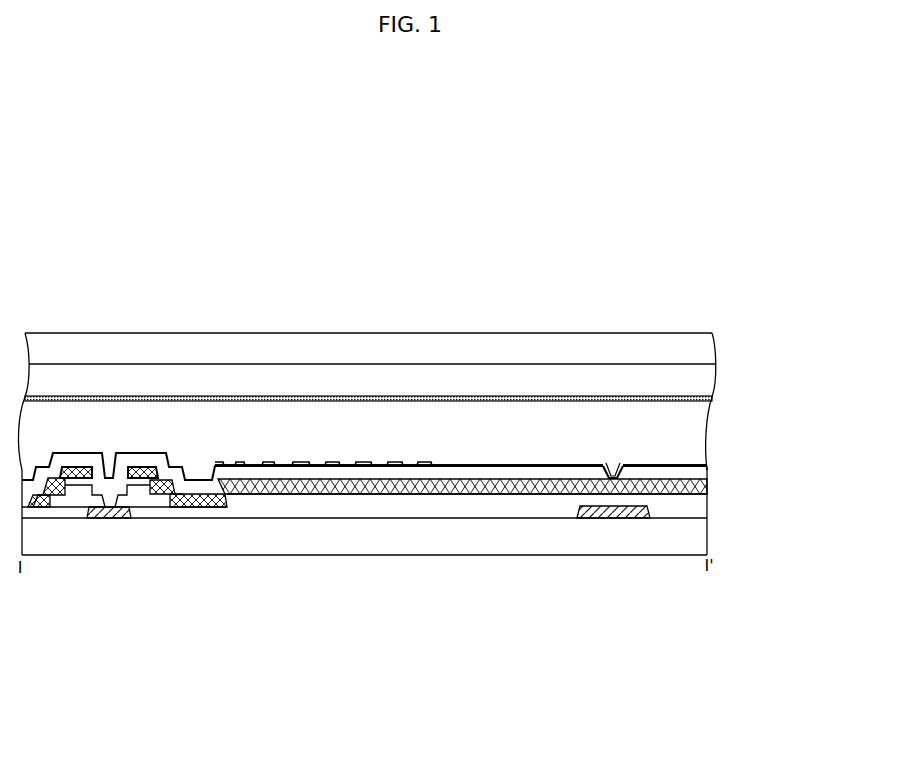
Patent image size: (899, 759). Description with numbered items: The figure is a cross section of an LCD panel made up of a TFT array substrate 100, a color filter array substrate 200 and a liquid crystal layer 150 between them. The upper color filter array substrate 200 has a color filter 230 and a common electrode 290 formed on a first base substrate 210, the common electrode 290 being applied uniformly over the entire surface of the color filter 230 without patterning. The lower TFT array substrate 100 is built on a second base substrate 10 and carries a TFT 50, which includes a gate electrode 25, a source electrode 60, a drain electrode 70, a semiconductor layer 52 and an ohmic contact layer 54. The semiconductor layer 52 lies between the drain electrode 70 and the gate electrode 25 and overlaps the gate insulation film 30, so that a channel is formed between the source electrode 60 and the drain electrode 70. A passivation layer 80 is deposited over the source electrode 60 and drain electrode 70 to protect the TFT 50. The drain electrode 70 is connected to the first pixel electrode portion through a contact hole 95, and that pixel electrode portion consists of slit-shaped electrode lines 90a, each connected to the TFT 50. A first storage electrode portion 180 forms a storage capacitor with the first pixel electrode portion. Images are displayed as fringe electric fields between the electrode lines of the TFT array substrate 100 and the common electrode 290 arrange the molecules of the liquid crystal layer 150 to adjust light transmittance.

The second base substrate 10 is at (622, 533).
The gate electrode 25 is at (92, 508).
The gate insulation film 30 is at (188, 513).
The TFT 50 is at (130, 561).
The semiconductor layer 52 is at (137, 488).
The ohmic contact layer 54 is at (145, 500).
The source electrode 60 is at (58, 495).
The drain electrode 70 is at (215, 502).
The passivation layer 80 is at (290, 496).
The slit-shaped electrode lines 90a is at (623, 464).
The contact hole 95 is at (607, 464).
The TFT array substrate 100 is at (415, 470).
The liquid crystal layer 150 is at (691, 497).
The first storage electrode portion 180 is at (511, 513).
The color filter array substrate 200 is at (415, 378).
The first base substrate 210 is at (72, 343).
The color filter 230 is at (120, 383).
The common electrode 290 is at (170, 396).